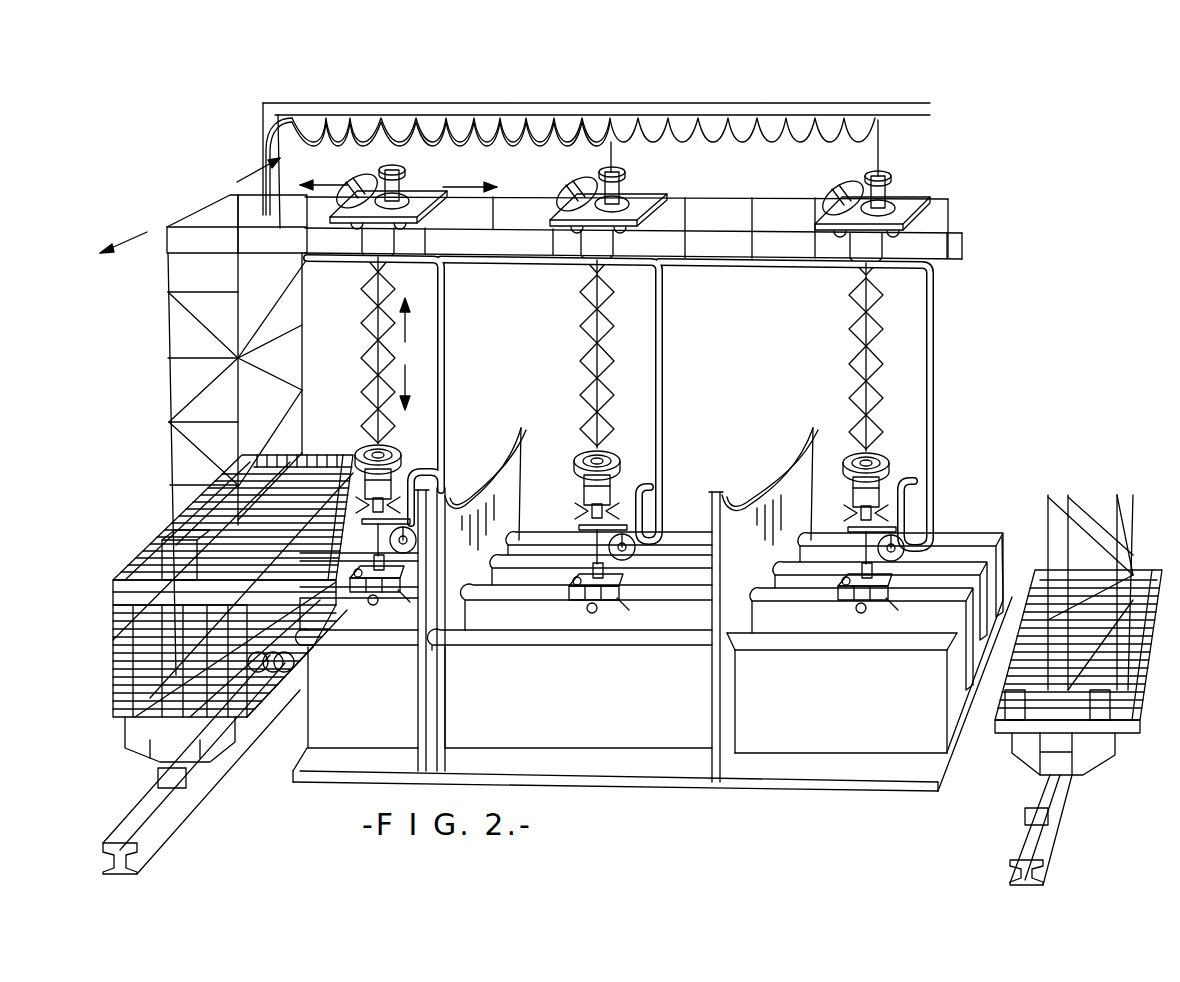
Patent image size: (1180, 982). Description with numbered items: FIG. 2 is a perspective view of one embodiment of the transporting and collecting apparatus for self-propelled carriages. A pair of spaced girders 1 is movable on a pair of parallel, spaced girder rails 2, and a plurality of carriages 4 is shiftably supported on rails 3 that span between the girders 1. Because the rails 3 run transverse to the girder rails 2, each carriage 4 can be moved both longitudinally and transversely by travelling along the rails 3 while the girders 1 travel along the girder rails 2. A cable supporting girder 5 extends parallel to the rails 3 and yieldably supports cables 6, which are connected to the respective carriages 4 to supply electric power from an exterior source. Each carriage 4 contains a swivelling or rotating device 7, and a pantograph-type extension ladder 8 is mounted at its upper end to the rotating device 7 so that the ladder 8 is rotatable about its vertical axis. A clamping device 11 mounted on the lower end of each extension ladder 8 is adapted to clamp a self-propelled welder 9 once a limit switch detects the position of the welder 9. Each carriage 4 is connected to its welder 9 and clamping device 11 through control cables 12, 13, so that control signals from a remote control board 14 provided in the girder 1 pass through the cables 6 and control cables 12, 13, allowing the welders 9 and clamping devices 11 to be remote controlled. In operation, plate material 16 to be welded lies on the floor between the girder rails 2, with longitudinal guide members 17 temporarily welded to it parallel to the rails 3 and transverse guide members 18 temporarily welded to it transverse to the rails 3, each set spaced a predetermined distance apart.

The girder 1 is at (168, 284).
The girder rail 2 is at (190, 798).
The rail 3 is at (773, 226).
The carriage 4 is at (418, 201).
The cable supporting girder 5 is at (727, 118).
The cable 6 is at (661, 117).
The rotating device 7 is at (628, 204).
The pantograph-type extension ladder 8 is at (582, 321).
The self-propelled welder 9 is at (600, 605).
The clamping device 11 is at (565, 462).
The control cable 12 is at (893, 208).
The control cable 13 is at (667, 332).
The remote control board 14 is at (163, 562).
The plate material 16 is at (757, 766).
The longitudinal guide member 17 is at (852, 733).
The transverse guide member 18 is at (710, 735).